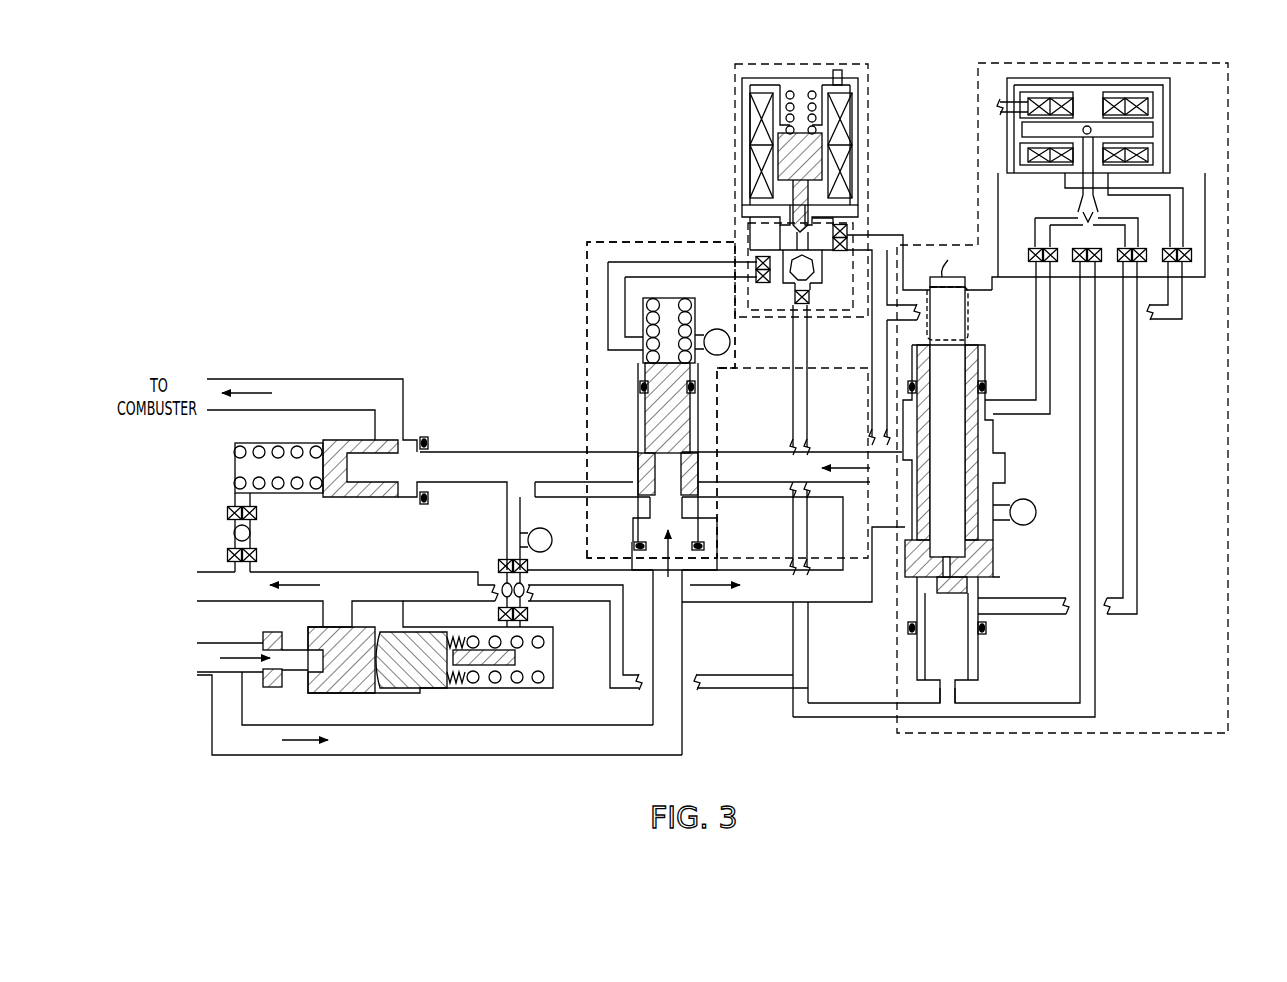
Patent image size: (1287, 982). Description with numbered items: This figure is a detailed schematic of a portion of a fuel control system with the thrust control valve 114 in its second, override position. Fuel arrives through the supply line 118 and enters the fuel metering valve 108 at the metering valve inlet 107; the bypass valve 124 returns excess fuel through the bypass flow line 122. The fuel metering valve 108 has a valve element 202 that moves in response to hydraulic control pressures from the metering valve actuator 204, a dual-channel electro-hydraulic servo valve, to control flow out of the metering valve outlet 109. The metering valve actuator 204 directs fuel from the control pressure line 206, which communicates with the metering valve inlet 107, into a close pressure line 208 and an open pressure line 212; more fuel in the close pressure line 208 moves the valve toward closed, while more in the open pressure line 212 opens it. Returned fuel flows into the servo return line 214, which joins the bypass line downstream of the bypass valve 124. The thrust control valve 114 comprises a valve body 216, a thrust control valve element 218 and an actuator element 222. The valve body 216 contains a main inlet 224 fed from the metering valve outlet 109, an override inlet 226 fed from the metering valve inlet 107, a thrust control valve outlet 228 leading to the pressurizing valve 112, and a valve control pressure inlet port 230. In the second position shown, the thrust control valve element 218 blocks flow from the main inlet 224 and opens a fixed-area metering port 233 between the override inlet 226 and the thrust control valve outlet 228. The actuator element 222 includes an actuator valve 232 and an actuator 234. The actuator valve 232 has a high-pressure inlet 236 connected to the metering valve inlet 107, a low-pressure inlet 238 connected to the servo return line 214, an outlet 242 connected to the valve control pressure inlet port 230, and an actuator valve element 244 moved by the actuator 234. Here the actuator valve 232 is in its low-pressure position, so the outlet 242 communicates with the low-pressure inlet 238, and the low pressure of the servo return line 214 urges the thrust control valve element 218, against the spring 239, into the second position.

The metering valve inlet 107 is at (890, 515).
The fuel metering valve 108 is at (1228, 352).
The metering valve outlet 109 is at (890, 463).
The pressurizing valve 112 is at (343, 445).
The thrust control valve 114 is at (660, 147).
The supply line 118 is at (462, 455).
The bypass flow line 122 is at (372, 572).
The bypass valve 124 is at (352, 700).
The valve element 202 is at (985, 447).
The metering valve actuator 204 is at (1178, 130).
The control pressure line 206 is at (1170, 322).
The close pressure line 208 is at (1036, 365).
The open pressure line 212 is at (1134, 416).
The servo return line 214 is at (1080, 575).
The valve body 216 is at (578, 365).
The thrust control valve element 218 is at (645, 395).
The actuator element 222 is at (727, 233).
The main inlet 224 is at (712, 471).
The override inlet 226 is at (658, 558).
The thrust control valve outlet 228 is at (624, 463).
The valve control pressure inlet port 230 is at (610, 305).
The actuator valve 232 is at (850, 224).
The fixed-area metering port 233 is at (685, 520).
The actuator 234 is at (853, 132).
The high-pressure inlet 236 is at (880, 243).
The low-pressure inlet 238 is at (797, 408).
The spring 239 is at (648, 354).
The outlet 242 is at (757, 266).
The actuator valve element 244 is at (800, 278).